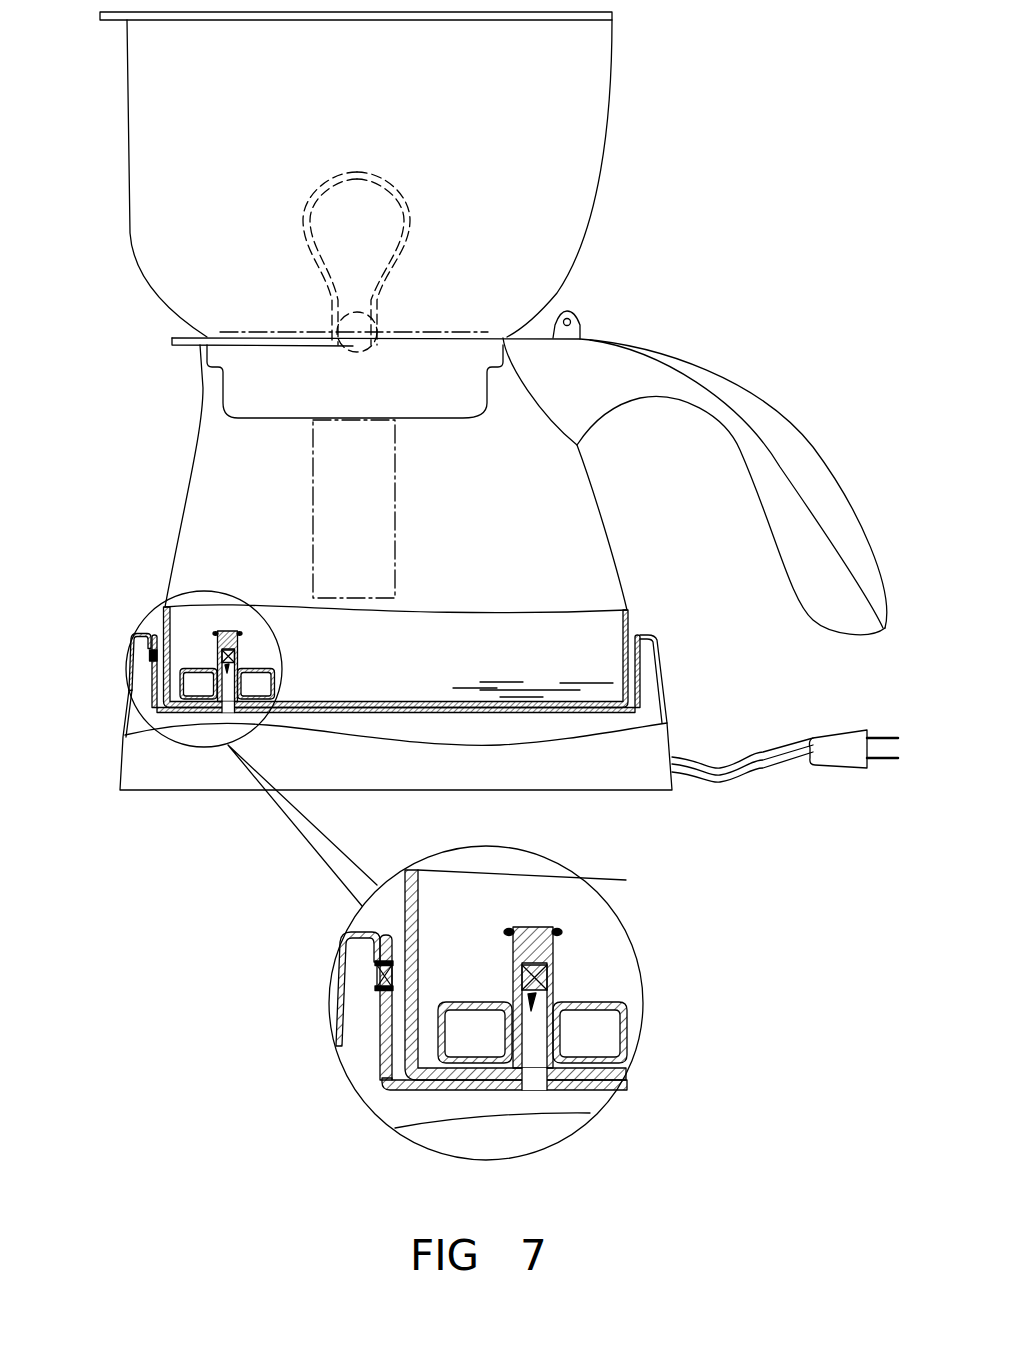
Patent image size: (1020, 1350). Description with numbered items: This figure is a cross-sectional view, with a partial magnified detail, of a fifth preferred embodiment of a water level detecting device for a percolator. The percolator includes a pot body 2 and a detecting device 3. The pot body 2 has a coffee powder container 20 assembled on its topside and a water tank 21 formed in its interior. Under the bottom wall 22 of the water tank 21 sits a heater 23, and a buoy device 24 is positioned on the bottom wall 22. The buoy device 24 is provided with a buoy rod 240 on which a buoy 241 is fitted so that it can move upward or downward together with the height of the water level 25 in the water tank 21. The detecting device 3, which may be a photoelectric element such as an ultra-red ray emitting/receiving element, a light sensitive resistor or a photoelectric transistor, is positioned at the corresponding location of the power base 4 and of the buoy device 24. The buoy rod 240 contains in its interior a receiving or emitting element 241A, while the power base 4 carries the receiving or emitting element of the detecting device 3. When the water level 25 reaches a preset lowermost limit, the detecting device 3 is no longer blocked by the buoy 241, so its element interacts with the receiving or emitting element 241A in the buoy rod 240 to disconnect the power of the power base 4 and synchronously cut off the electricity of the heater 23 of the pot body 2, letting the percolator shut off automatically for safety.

The pot body 2 is at (190, 458).
The detecting device 3 is at (150, 660).
The power base 4 is at (667, 700).
The coffee powder container 20 is at (577, 125).
The water tank 21 is at (557, 583).
The bottom wall 22 is at (480, 697).
The heater 23 is at (587, 713).
The buoy device 24 is at (417, 783).
The water level 25 is at (440, 680).
The buoy rod 240 is at (233, 633).
The buoy 241 is at (277, 678).
The receiving or emitting element 241A is at (224, 657).